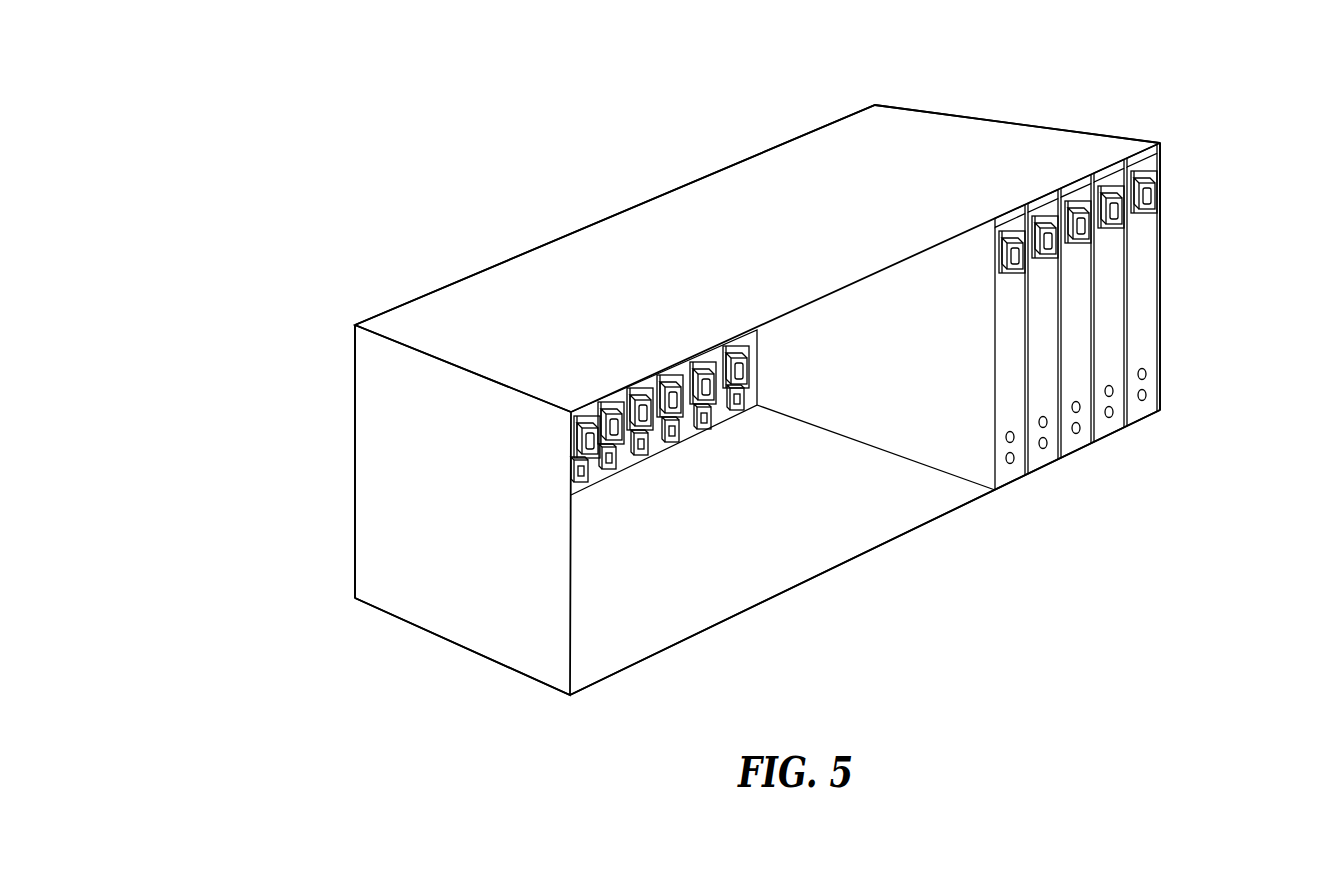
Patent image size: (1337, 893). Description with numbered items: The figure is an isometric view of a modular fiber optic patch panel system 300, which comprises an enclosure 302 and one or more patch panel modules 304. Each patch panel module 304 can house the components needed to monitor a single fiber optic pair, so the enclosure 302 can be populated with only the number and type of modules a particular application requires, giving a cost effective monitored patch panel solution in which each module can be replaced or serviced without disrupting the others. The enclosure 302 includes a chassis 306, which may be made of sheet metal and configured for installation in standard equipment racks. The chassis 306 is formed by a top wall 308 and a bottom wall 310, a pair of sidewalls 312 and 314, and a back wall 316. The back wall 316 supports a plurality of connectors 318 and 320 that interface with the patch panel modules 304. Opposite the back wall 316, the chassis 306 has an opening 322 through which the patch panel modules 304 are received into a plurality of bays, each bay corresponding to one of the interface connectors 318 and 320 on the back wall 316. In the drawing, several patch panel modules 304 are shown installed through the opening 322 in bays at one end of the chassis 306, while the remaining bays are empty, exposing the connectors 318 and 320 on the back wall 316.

The modular fiber optic patch panel system 300 is at (1133, 80).
The enclosure 302 is at (699, 170).
The patch panel modules 304 is at (1168, 295).
The chassis 306 is at (355, 537).
The top wall 308 is at (477, 318).
The bottom wall 310 is at (682, 622).
The sidewall 312 is at (458, 597).
The sidewall 314 is at (1162, 144).
The back wall 316 is at (622, 455).
The connectors 318 is at (758, 355).
The connectors 320 is at (753, 407).
The opening 322 is at (832, 551).